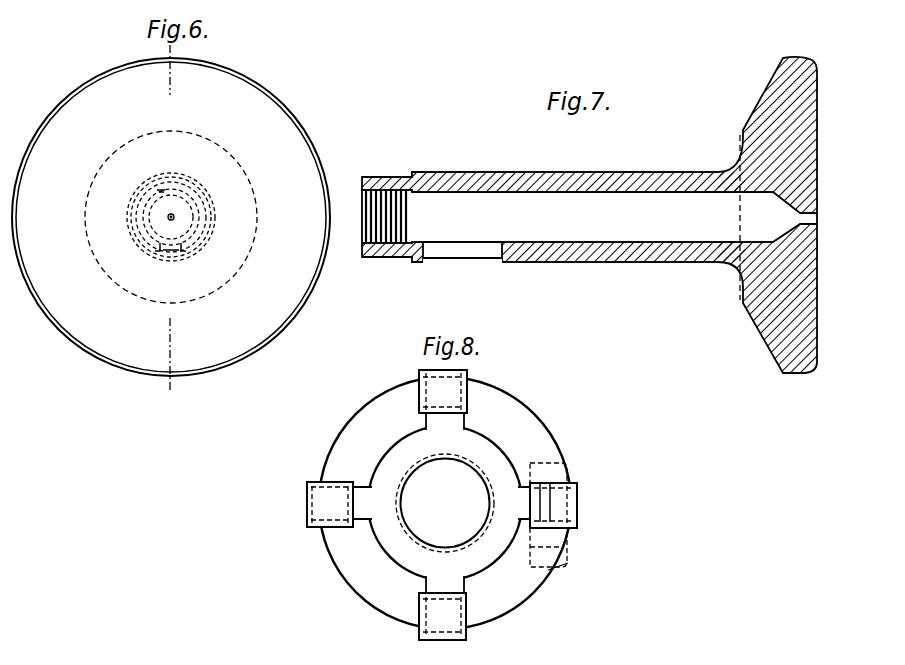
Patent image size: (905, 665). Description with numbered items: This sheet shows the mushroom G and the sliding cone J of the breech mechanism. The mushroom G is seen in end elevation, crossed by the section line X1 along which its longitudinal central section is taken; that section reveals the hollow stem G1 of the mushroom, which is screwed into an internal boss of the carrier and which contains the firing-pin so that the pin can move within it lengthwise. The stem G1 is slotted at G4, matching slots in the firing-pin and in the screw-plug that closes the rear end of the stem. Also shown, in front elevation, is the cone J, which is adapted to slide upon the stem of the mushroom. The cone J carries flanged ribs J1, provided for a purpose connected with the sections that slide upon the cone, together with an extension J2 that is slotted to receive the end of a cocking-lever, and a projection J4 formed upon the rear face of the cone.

In FIG. 6, the mushroom G is at (171, 217).
In FIG. 7, the mushroom G is at (767, 215).
In FIG. 7, the stem of the mushroom G1 is at (575, 176).
In FIG. 7, the slot in the stem G4 is at (458, 250).
In FIG. 6, the section line X' X' X1 is at (176, 219).
In FIG. 8, the cone J is at (445, 503).
In FIG. 8, the flanged ribs J1 is at (586, 503).
In FIG. 8, the extension upon the cone J2 is at (560, 546).
In FIG. 8, the projection upon the rear face of the cone J4 is at (568, 565).